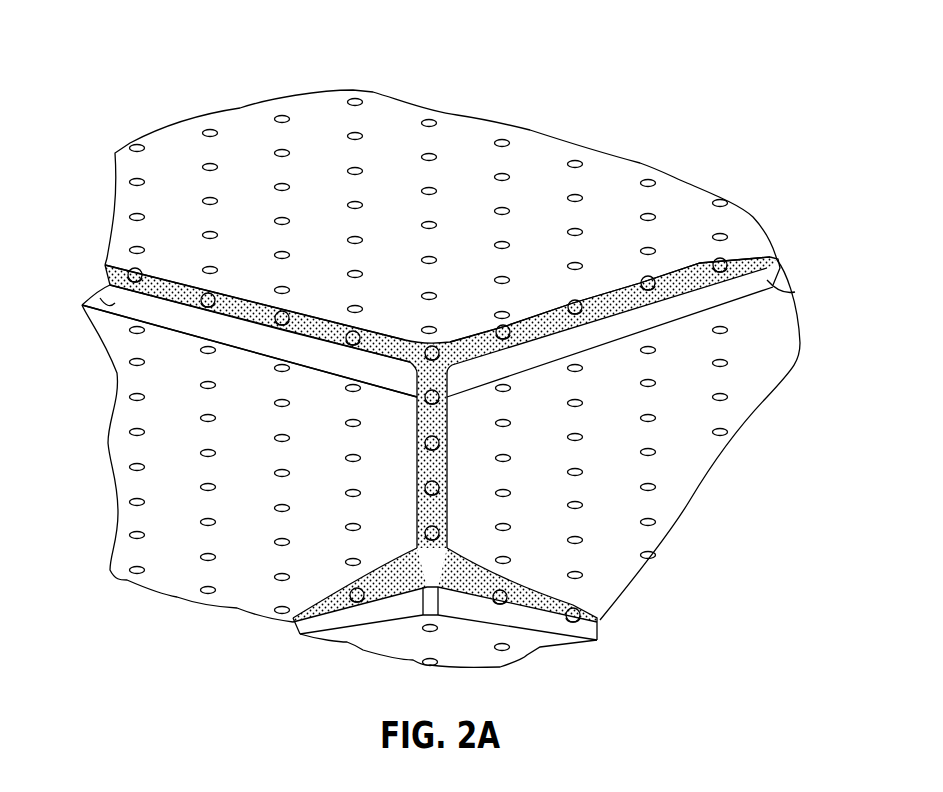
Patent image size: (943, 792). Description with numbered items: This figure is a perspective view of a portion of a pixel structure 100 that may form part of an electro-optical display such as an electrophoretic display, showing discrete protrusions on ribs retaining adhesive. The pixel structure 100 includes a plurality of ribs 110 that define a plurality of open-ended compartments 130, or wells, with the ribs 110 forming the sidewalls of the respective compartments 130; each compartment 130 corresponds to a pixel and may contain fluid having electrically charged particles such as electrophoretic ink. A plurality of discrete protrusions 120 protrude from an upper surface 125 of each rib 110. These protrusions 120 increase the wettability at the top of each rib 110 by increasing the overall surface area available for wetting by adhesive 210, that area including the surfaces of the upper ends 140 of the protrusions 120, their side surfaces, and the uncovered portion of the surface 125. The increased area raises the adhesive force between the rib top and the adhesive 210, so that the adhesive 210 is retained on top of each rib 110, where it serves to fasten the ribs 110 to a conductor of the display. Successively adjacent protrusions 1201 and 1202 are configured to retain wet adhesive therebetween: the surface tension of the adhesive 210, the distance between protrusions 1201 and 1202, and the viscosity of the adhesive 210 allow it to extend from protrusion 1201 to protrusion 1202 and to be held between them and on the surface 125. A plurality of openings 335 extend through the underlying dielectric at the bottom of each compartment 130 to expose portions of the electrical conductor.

The pixel structure 100 is at (620, 86).
The rib 110 is at (82, 305).
The discrete protrusion 120 is at (215, 305).
The protrusion 1201 is at (283, 315).
The protrusion 1202 is at (353, 333).
The surface 125 is at (478, 347).
The compartment 130 is at (240, 128).
The end 140 is at (285, 313).
The adhesive 210 is at (183, 285).
The opening 335 is at (356, 100).